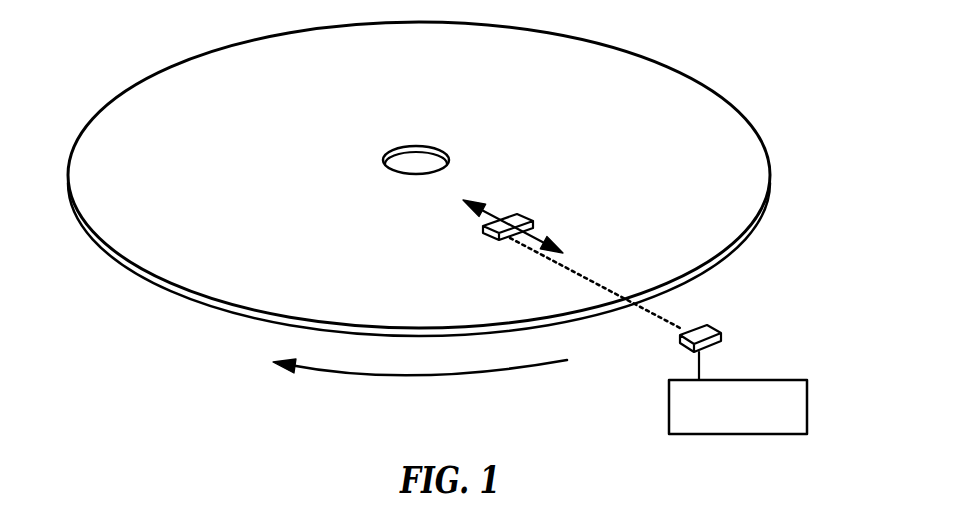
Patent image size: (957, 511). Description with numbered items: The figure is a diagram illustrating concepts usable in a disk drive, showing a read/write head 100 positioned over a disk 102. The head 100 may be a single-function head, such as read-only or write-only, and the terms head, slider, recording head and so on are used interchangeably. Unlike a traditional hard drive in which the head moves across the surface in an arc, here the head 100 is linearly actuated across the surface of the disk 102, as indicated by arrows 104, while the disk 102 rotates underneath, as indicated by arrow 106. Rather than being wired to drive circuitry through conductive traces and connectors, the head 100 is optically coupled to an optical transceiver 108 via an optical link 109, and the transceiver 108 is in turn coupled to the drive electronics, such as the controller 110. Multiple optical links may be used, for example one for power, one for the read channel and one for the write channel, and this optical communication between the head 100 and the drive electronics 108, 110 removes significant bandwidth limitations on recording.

The read/write head 100 is at (484, 231).
The disk 102 is at (154, 72).
The arrows 104 is at (489, 210).
The arrow 106 is at (545, 362).
The optical transceiver 108 is at (711, 345).
The optical link 109 is at (655, 313).
The controller 110 is at (786, 433).